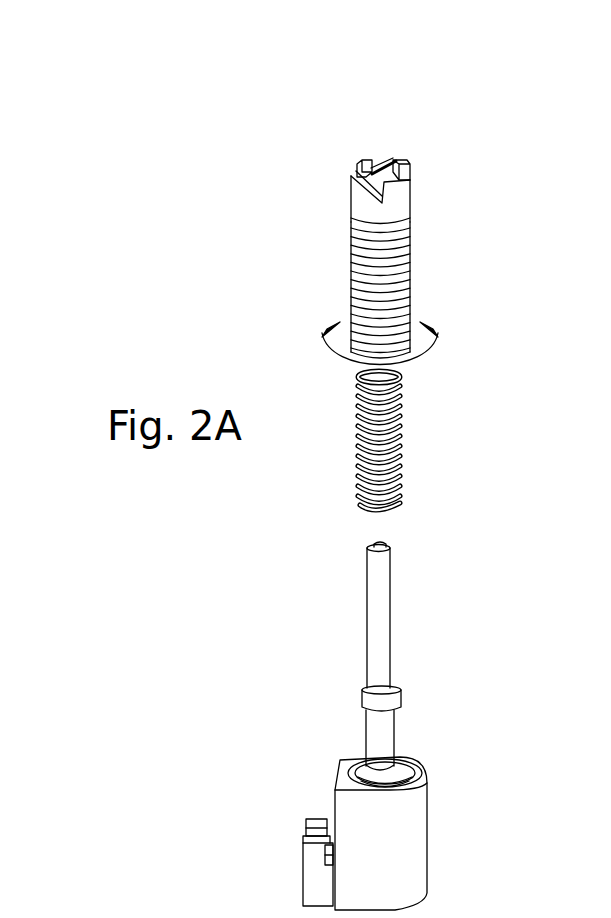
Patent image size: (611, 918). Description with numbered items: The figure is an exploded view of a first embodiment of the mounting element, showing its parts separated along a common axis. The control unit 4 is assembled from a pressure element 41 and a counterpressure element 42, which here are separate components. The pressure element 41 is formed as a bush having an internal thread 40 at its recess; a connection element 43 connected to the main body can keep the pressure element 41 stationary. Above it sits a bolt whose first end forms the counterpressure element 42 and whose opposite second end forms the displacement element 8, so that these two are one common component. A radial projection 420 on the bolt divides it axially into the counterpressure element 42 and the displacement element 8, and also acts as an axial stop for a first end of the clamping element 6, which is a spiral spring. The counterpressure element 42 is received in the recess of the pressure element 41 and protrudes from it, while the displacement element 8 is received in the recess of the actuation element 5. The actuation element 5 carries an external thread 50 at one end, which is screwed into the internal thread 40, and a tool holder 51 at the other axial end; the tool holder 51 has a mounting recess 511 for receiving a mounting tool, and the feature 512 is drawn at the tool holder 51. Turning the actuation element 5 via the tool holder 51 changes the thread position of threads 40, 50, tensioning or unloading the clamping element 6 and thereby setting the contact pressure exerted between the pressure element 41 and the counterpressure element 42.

The control unit 4 is at (352, 726).
The actuation element 5 is at (394, 209).
The clamping element 6 is at (400, 437).
The displacement element 8 is at (392, 611).
The internal thread 40 is at (352, 763).
The pressure element 41 is at (381, 795).
The counterpressure element 42 is at (398, 656).
The connection element 43 is at (291, 819).
The external thread 50 is at (380, 270).
The tool holder 51 is at (362, 138).
The radial projection 420 is at (363, 694).
The mounting recess 511 is at (360, 168).
The slot 512 is at (383, 168).